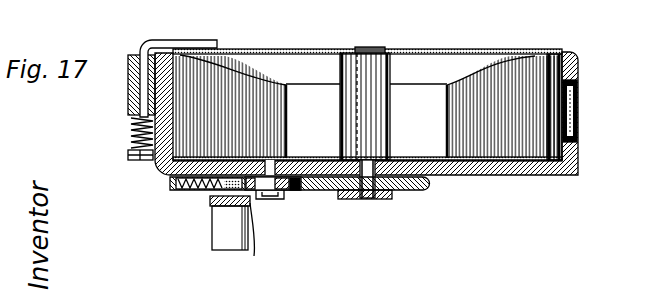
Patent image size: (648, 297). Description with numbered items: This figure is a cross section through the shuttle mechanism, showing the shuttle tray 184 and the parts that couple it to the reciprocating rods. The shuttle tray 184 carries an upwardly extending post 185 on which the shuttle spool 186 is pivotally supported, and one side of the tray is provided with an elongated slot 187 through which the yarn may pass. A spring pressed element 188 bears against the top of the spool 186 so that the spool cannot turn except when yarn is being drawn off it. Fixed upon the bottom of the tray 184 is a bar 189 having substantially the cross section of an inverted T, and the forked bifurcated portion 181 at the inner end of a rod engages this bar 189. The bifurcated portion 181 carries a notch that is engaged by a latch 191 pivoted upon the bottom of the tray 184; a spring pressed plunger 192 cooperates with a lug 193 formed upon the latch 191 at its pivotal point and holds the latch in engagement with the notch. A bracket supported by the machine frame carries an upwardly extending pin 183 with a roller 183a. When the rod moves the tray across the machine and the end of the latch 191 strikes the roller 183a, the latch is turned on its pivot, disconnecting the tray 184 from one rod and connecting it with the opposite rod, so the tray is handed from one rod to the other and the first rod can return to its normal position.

The forked bifurcated portion 181 is at (415, 190).
The pin 183 is at (228, 236).
The roller 183a is at (270, 240).
The shuttle tray 184 is at (578, 157).
The post 185 is at (378, 41).
The shuttle spool 186 is at (476, 43).
The elongated slot 187 is at (578, 97).
The spring pressed element 188 is at (145, 42).
The bar 189 is at (370, 199).
The latch 191 is at (290, 192).
The spring pressed plunger 192 is at (206, 192).
The lug 193 is at (312, 198).